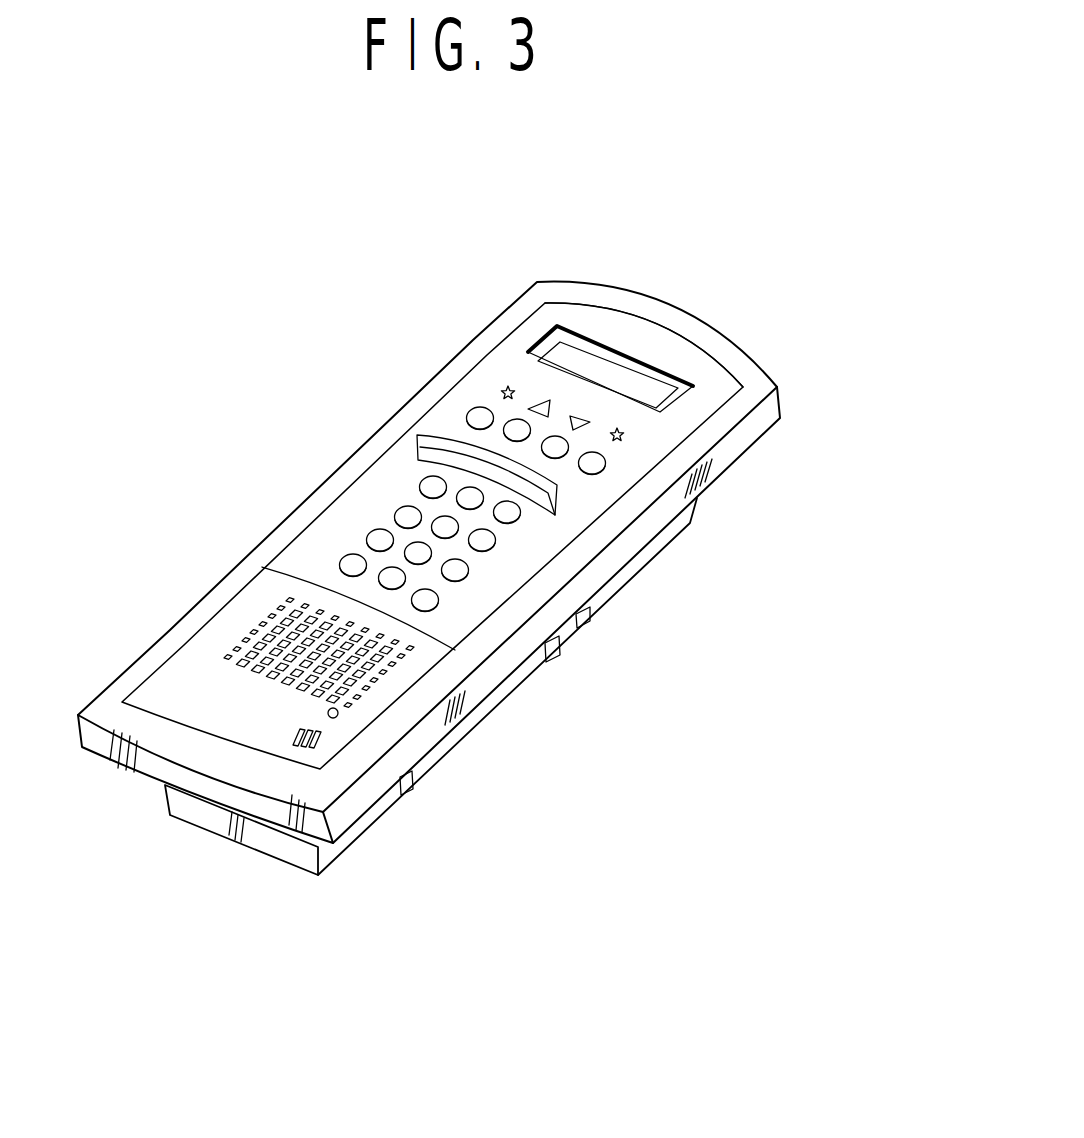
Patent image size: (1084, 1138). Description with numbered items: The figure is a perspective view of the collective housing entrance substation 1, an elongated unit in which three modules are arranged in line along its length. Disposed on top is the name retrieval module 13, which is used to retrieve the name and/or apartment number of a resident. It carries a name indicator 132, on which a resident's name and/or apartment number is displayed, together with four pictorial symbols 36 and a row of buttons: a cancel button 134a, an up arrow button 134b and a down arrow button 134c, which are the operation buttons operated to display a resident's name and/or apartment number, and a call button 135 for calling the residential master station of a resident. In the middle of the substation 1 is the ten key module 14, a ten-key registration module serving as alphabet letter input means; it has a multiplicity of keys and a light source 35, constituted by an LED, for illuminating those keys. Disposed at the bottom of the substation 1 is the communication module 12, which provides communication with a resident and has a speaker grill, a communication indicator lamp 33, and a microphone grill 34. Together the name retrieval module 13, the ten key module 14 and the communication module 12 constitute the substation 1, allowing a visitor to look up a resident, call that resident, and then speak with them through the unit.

The collective housing entrance substation 1 is at (802, 390).
The communication module 12 is at (378, 700).
The name retrieval module 13 is at (664, 438).
The ten key module 14 is at (497, 568).
The communication indicator lamp 33 is at (312, 745).
The microphone grill 34 is at (333, 718).
The light source 35 is at (437, 453).
The pictorial symbols 36 is at (626, 436).
The name indicator 132 is at (613, 377).
The cancel button 134a is at (476, 418).
The up arrow button 134b is at (517, 425).
The down arrow button 134c is at (555, 445).
The call button 135 is at (593, 463).